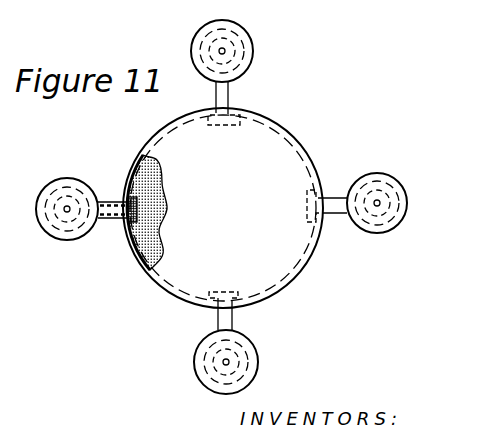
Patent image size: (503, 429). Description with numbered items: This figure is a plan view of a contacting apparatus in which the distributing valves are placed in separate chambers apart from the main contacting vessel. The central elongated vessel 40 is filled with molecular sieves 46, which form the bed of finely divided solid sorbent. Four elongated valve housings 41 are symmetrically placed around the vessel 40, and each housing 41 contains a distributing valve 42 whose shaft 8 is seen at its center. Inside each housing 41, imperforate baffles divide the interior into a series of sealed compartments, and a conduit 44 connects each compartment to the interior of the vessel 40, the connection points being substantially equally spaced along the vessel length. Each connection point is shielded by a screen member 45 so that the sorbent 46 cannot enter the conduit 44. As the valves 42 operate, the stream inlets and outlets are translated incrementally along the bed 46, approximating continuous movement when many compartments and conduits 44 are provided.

The elongated vessel 40 is at (153, 134).
The elongated valve housing 41 is at (248, 41).
The distributing valve 42 is at (252, 362).
The shaft 8 is at (374, 200).
The conduit 44 is at (230, 91).
The screen member 45 is at (136, 203).
The molecular sieves 46 is at (150, 231).